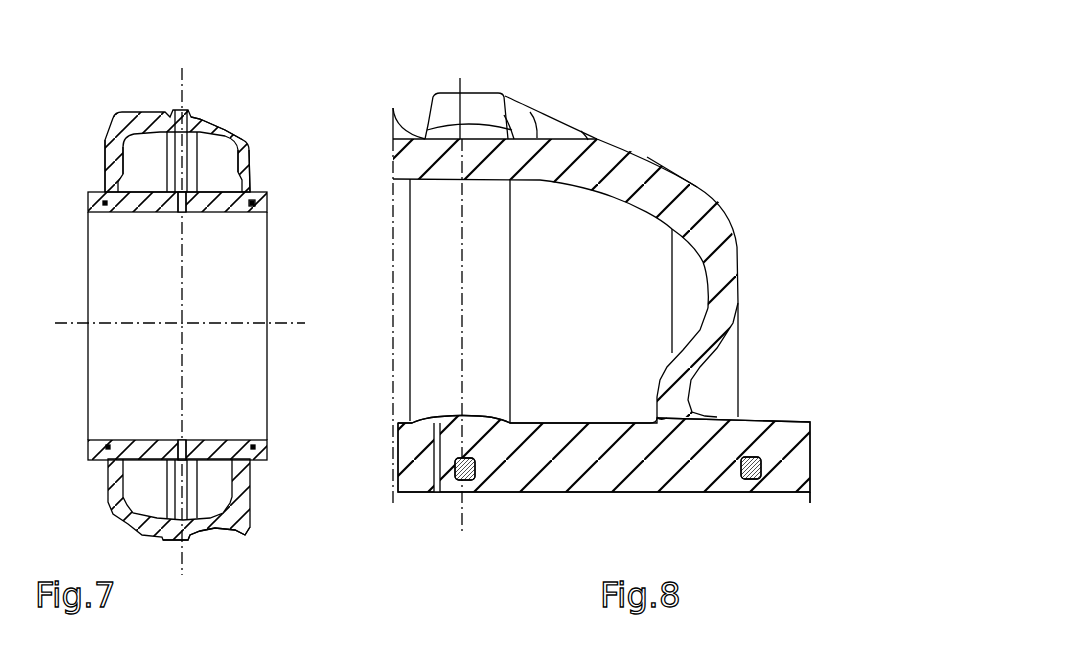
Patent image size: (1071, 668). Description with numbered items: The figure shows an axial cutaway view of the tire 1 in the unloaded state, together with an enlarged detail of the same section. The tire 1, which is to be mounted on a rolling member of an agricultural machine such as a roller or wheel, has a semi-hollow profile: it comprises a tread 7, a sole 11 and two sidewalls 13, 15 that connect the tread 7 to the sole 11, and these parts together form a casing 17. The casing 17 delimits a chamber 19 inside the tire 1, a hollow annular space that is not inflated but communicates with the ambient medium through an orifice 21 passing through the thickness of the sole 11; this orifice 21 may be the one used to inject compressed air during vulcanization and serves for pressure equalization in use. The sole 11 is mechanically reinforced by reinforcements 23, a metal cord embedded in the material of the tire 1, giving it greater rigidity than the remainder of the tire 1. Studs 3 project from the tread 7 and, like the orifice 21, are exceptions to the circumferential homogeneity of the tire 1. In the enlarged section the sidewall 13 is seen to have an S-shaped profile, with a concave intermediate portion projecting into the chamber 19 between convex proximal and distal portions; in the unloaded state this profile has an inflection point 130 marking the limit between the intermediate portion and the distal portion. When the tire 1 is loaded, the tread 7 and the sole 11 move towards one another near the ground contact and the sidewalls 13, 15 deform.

In FIG. 7, the tire 1 is at (88, 122).
In FIG. 8, the tire 1 is at (702, 92).
In FIG. 7, the studs 3 is at (148, 112).
In FIG. 8, the studs 3 is at (486, 103).
In FIG. 7, the tread 7 is at (225, 517).
In FIG. 8, the tread 7 is at (598, 163).
In FIG. 7, the sole 11 is at (210, 203).
In FIG. 8, the sole 11 is at (512, 480).
In FIG. 7, the sidewall 13 is at (257, 153).
In FIG. 8, the sidewall 13 is at (705, 230).
In FIG. 7, the sidewall 15 is at (102, 148).
In FIG. 7, the casing 17 is at (218, 120).
In FIG. 8, the casing 17 is at (662, 188).
In FIG. 7, the chamber 19 is at (220, 498).
In FIG. 8, the chamber 19 is at (607, 249).
In FIG. 7, the orifice 21 is at (158, 200).
In FIG. 8, the orifice 21 is at (437, 467).
In FIG. 7, the reinforcements 23 is at (245, 202).
In FIG. 8, the reinforcements 23 is at (753, 482).
In FIG. 8, the inflection point 130 is at (696, 340).